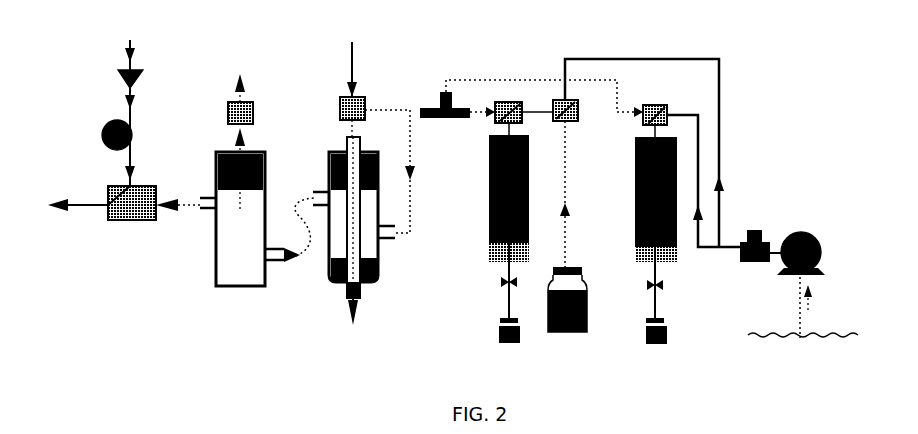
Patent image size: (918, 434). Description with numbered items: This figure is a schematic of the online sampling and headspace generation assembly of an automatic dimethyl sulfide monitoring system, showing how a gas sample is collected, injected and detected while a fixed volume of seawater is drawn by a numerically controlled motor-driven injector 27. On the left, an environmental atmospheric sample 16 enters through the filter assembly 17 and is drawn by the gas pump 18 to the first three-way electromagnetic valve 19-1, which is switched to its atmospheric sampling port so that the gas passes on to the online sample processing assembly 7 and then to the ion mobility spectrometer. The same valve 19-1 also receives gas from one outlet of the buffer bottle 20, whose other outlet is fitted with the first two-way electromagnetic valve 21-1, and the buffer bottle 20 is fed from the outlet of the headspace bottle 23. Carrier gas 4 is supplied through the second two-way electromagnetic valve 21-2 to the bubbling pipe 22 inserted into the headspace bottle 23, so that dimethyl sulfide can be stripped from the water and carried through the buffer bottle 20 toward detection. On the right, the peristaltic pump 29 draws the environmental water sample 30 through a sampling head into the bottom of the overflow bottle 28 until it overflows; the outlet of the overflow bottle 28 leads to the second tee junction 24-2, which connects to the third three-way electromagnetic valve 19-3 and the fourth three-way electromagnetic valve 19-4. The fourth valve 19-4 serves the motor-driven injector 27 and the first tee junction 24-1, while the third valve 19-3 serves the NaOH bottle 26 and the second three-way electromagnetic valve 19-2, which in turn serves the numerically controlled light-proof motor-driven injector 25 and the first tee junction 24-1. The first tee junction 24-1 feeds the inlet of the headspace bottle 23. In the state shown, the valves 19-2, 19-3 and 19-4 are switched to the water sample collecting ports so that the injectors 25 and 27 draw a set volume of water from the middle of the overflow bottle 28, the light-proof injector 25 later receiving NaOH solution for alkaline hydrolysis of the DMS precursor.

The carrier gas 4 is at (352, 60).
The online sample processing assembly 7 is at (69, 205).
The environmental atmospheric sample 16 is at (130, 46).
The filter assembly 17 is at (142, 77).
The gas pump 18 is at (132, 135).
The first three-way electromagnetic valve 19-1 is at (132, 216).
The second three-way electromagnetic valve 19-2 is at (504, 102).
The third three-way electromagnetic valve 19-3 is at (581, 122).
The fourth three-way electromagnetic valve 19-4 is at (651, 105).
The buffer bottle 20 is at (250, 218).
The first two-way electromagnetic valve 21-1 is at (258, 99).
The second two-way electromagnetic valve 21-2 is at (370, 117).
The bubbling pipe 22 is at (344, 286).
The headspace bottle 23 is at (357, 231).
The first tee junction 24-1 is at (457, 119).
The second tee junction 24-2 is at (703, 195).
The numerically controlled light-proof motor-driven injector 25 is at (509, 251).
The NaOH bottle 26 is at (567, 311).
The numerically controlled motor-driven injector 27 is at (656, 252).
The overflow bottle 28 is at (760, 236).
The peristaltic pump 29 is at (811, 285).
The environmental water sample 30 is at (803, 327).